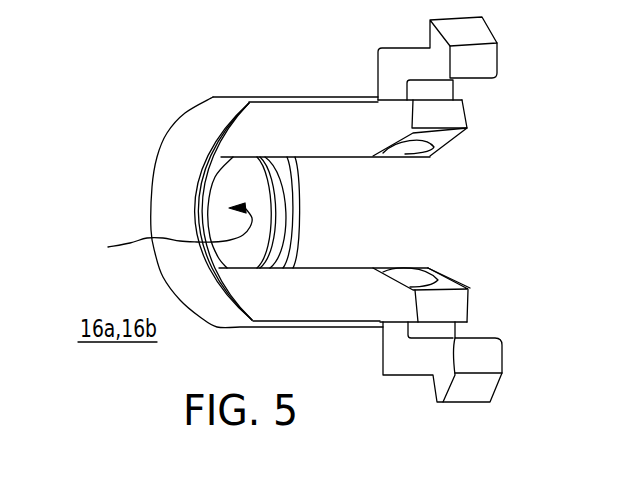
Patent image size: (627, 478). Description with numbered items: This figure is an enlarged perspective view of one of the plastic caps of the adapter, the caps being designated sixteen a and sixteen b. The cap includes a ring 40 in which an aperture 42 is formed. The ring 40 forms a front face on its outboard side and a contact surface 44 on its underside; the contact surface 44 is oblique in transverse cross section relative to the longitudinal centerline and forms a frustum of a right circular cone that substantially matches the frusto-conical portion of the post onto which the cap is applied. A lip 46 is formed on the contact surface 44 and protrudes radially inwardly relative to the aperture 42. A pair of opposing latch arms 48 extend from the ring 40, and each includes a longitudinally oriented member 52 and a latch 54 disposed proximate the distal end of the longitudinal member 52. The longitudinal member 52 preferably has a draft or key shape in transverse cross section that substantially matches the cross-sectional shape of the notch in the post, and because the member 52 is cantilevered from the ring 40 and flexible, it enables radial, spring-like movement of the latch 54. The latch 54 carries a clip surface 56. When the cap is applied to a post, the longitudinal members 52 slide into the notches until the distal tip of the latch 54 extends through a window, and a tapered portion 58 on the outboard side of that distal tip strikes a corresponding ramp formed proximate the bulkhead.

The ring 40 is at (180, 163).
The aperture 42 is at (163, 235).
The contact surface 44 is at (333, 229).
The lip 46 is at (290, 200).
The latch arms 48 is at (323, 125).
The longitudinal member 52 is at (274, 127).
The latch 54 is at (425, 65).
The clip surface 56 is at (430, 33).
The tapered portion 58 is at (478, 387).